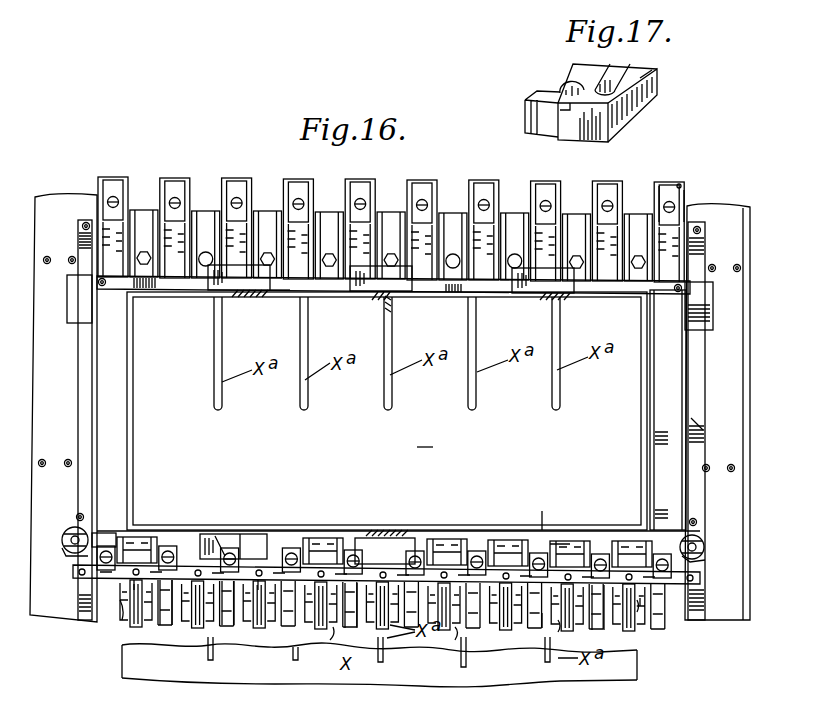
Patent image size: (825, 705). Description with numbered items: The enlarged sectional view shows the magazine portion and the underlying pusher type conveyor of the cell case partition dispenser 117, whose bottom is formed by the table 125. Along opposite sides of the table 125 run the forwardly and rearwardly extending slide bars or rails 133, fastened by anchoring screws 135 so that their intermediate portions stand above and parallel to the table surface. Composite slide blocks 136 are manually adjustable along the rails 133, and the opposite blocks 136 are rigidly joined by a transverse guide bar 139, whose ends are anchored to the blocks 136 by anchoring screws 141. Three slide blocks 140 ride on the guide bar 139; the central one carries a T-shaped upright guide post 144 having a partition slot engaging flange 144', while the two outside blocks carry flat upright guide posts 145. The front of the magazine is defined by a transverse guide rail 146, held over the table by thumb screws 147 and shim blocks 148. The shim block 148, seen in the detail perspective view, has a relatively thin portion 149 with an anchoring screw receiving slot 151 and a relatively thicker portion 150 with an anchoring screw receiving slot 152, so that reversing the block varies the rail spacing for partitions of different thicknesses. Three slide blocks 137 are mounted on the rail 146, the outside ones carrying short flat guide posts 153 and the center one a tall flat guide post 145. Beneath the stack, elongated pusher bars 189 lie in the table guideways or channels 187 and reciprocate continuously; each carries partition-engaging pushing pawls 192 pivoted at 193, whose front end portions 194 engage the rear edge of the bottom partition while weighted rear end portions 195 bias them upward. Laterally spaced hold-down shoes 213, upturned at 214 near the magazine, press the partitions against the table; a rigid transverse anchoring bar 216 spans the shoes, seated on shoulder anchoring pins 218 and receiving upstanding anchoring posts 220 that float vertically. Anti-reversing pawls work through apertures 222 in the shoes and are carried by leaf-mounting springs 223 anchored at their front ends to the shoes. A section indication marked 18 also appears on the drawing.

In FIG. 16, the cell case partition dispenser 117 is at (698, 422).
In FIG. 16, the table 125 is at (68, 610).
In FIG. 16, the slide bar or rail 133 is at (80, 410).
In FIG. 16, the anchoring screw 135 is at (82, 226).
In FIG. 16, the composite slide block 136 is at (76, 297).
In FIG. 16, the slide block 137 is at (230, 533).
In FIG. 16, the transverse guide bar or rail 139 is at (287, 293).
In FIG. 16, the slide block 140 is at (393, 279).
In FIG. 16, the anchoring screw 141 is at (98, 282).
In FIG. 16, the T-shaped upright guide post 144 is at (362, 308).
In FIG. 16, the partition slot engaging flange 144' is at (417, 311).
In FIG. 16, the flat upright guide post 145 is at (232, 299).
In FIG. 16, the transverse guide rail 146 is at (147, 531).
In FIG. 16, the thumb screw 147 is at (62, 540).
In FIG. 16, the shim block 148 is at (65, 555).
In FIG. 17, the shim block 148 is at (613, 128).
In FIG. 17, the relatively thin portion 149 is at (525, 115).
In FIG. 17, the relatively thicker portion 150 is at (652, 80).
In FIG. 17, the anchoring screw receiving slot 151 is at (551, 138).
In FIG. 17, the anchoring screw receiving slot 152 is at (633, 65).
In FIG. 16, the short flat guide post 153 is at (227, 529).
In FIG. 16, the table guideway or channel 187 is at (93, 626).
In FIG. 16, the pusher bar 189 is at (195, 180).
In FIG. 16, the partition-engaging pushing pawl 192 is at (117, 181).
In FIG. 16, the pivot 193 is at (663, 203).
In FIG. 16, the partition-engaging front end portion 194 is at (685, 220).
In FIG. 16, the weighted rear end portion 195 is at (678, 183).
In FIG. 16, the hold-down shoe 213 is at (120, 630).
In FIG. 16, the upturned rear end 214 is at (318, 560).
In FIG. 16, the transverse anchoring bar 216 is at (87, 577).
In FIG. 16, the shoulder anchoring pin 218 is at (80, 575).
In FIG. 16, the upstanding anchoring post 220 is at (137, 568).
In FIG. 16, the aperture 222 is at (123, 600).
In FIG. 16, the leaf-mounting spring 223 is at (133, 622).
In FIG. 16, the section line 18 is at (540, 511).